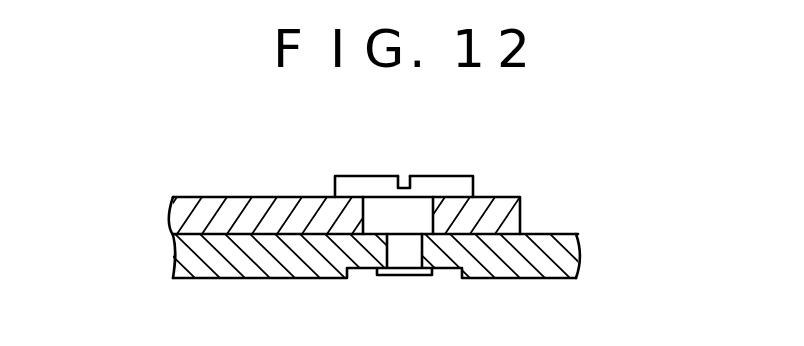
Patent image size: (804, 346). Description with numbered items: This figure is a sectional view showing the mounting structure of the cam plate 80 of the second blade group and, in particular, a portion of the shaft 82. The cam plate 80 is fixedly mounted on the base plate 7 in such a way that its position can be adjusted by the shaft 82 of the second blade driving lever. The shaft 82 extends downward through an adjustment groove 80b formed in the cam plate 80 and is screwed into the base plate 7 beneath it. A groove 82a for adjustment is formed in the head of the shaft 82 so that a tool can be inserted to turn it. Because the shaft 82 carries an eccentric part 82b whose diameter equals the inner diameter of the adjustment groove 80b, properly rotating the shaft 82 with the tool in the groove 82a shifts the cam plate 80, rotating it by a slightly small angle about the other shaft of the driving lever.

The base plate 7 is at (580, 250).
The cam plate 80 is at (203, 197).
The adjustment groove 80b is at (366, 200).
The shaft 82 is at (473, 185).
The groove for adjustment 82a is at (403, 176).
The eccentric part 82b is at (385, 210).